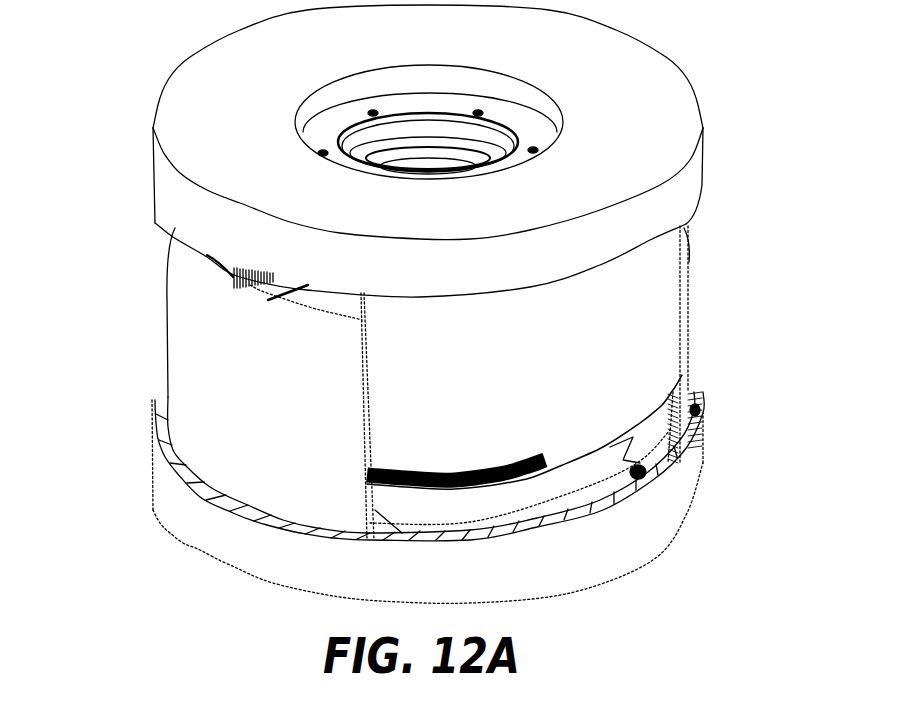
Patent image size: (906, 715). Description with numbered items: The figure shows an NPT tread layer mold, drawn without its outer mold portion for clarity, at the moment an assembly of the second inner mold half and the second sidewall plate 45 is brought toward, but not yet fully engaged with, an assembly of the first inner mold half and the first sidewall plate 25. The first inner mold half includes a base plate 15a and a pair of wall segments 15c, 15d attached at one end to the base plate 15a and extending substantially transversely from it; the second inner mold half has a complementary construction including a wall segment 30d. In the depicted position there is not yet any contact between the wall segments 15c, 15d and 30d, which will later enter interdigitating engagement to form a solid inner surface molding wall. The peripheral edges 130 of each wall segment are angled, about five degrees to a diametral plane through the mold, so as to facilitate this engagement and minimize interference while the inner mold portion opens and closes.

The second sidewall plate 45 is at (653, 68).
The wall segment 15c is at (180, 355).
The wall segment 15d is at (687, 330).
The peripheral edges 130 is at (360, 360).
The wall segment 30d is at (650, 370).
The base plate 15a is at (517, 500).
The first sidewall plate 25 is at (178, 527).